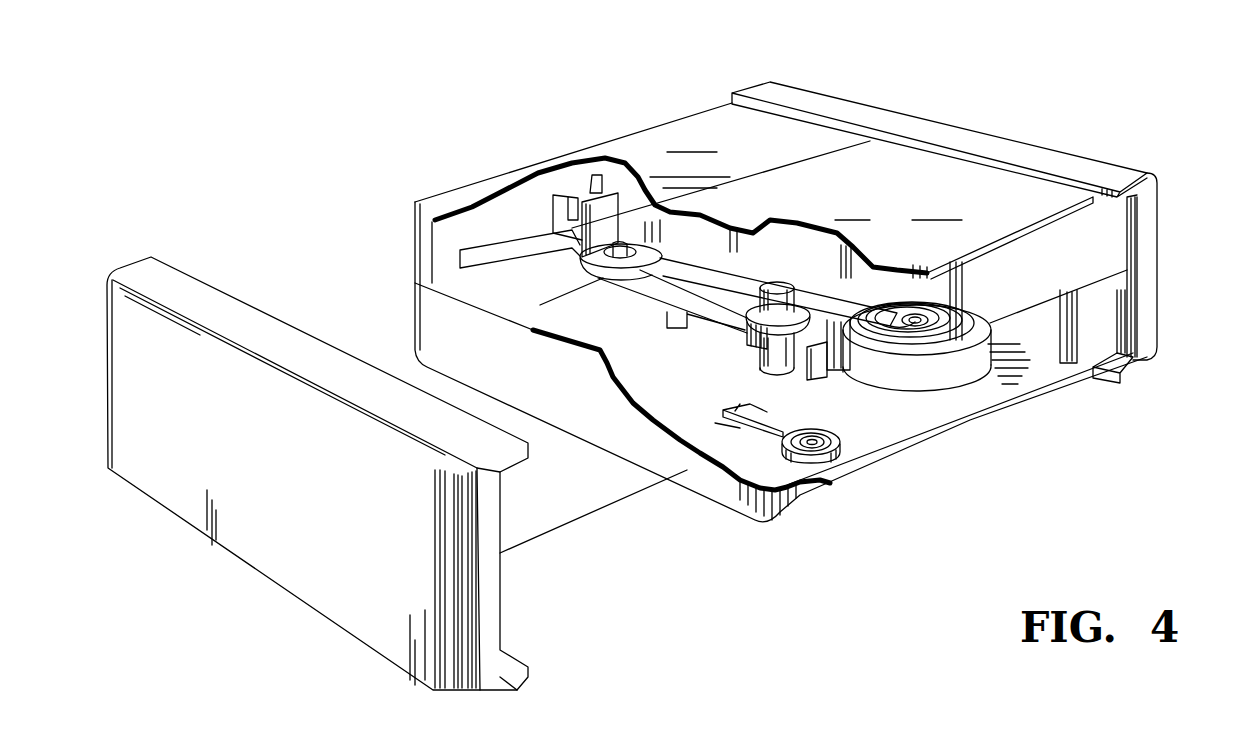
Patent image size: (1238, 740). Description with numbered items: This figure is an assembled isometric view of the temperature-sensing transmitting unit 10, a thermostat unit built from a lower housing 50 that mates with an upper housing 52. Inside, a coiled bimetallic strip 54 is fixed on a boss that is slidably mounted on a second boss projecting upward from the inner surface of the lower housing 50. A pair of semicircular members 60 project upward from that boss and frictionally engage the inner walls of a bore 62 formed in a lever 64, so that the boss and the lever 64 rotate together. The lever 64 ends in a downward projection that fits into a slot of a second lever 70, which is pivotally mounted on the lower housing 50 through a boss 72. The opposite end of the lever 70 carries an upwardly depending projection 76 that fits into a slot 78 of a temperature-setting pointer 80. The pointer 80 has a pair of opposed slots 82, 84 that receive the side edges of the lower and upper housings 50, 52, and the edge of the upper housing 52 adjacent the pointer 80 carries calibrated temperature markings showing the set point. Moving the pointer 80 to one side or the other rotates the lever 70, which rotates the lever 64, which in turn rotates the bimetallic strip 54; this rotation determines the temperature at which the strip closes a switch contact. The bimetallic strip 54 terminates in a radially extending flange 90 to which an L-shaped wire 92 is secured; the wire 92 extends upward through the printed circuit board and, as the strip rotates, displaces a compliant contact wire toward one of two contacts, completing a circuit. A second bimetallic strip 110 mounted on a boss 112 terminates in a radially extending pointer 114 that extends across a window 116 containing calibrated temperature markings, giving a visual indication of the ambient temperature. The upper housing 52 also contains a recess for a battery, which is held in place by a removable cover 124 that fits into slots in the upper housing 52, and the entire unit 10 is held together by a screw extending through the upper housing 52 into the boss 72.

The temperature-sensing transmitting unit 10 is at (982, 60).
The lower housing 50 is at (727, 497).
The upper housing 52 is at (458, 198).
The coiled bimetallic strip 54 is at (950, 375).
The semicircular members 60 is at (920, 316).
The bore 62 is at (912, 316).
The lever 64 is at (857, 300).
The lever 70 is at (717, 302).
The boss 72 is at (760, 358).
The upwardly depending projection 76 is at (622, 245).
The slot 78 is at (645, 260).
The temperature-setting pointer 80 is at (562, 212).
The slot 82 is at (573, 245).
The slot 84 is at (577, 198).
The radially extending flange 90 is at (820, 377).
The L-shaped wire 92 is at (800, 330).
The second bimetallic strip 110 is at (833, 445).
The boss 112 is at (817, 440).
The radially extending pointer 114 is at (807, 472).
The window 116 is at (730, 423).
The removable cover 124 is at (913, 207).